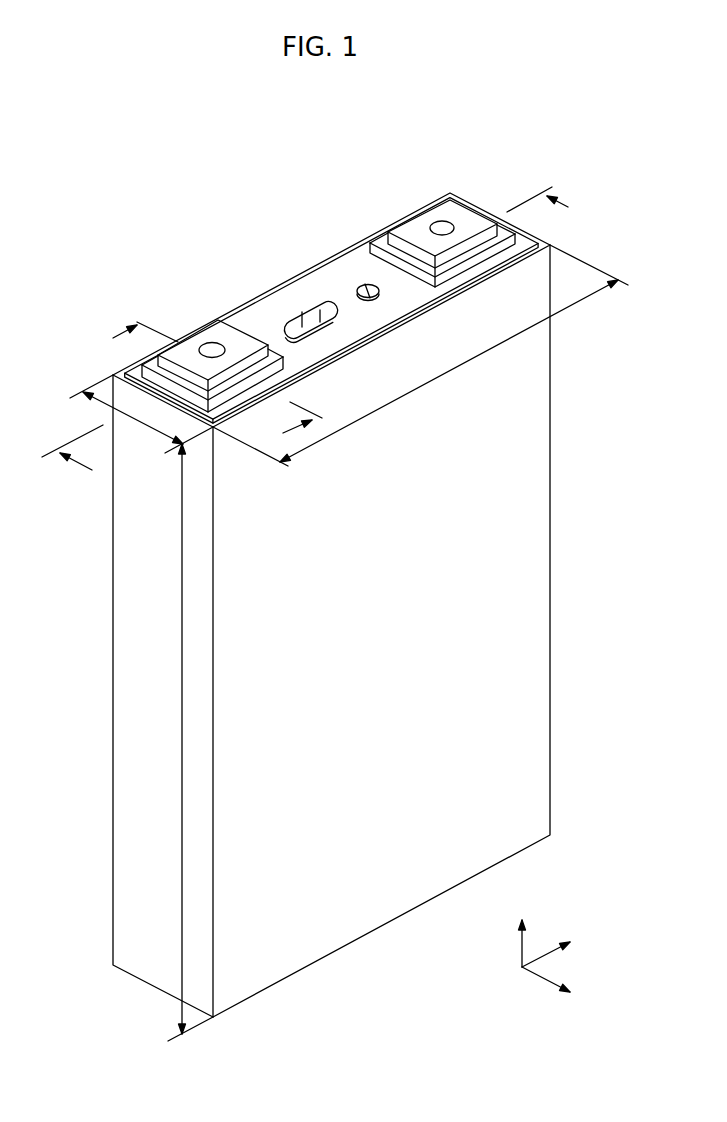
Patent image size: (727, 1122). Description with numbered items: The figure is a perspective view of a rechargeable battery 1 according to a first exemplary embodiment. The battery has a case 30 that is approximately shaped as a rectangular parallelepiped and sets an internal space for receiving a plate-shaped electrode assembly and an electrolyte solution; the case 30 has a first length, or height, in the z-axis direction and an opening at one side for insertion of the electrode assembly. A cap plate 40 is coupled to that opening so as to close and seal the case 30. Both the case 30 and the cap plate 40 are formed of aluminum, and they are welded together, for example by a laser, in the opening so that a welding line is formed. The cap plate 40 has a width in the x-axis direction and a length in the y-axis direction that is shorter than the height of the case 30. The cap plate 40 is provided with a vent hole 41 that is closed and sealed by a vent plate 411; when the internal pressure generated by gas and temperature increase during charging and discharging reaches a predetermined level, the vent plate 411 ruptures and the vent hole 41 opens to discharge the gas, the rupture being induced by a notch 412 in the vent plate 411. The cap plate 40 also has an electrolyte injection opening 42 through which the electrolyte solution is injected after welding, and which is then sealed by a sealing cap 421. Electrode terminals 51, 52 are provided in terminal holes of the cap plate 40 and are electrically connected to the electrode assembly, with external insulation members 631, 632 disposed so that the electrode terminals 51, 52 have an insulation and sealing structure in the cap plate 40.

The rechargeable battery 1 is at (133, 152).
The case 30 is at (553, 432).
The cap plate 40 is at (323, 270).
The vent hole 41 is at (285, 325).
The vent plate 411 is at (302, 322).
The notch 412 is at (315, 317).
The electrolyte injection opening 42 is at (382, 288).
The sealing cap 421 is at (367, 284).
The electrode terminal 51 is at (158, 334).
The electrode terminal 52 is at (428, 209).
The external insulation member 631 is at (138, 362).
The external insulation member 632 is at (385, 240).